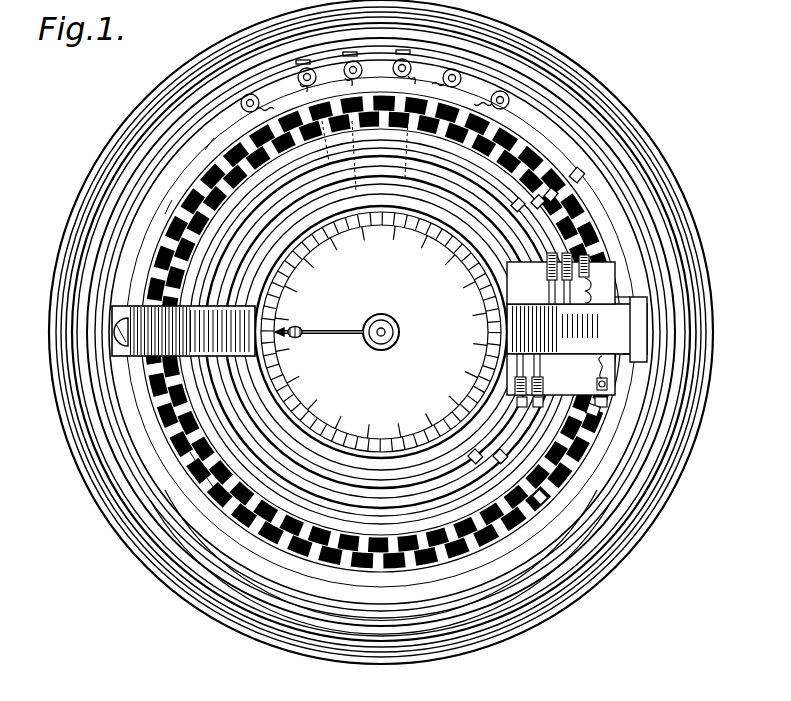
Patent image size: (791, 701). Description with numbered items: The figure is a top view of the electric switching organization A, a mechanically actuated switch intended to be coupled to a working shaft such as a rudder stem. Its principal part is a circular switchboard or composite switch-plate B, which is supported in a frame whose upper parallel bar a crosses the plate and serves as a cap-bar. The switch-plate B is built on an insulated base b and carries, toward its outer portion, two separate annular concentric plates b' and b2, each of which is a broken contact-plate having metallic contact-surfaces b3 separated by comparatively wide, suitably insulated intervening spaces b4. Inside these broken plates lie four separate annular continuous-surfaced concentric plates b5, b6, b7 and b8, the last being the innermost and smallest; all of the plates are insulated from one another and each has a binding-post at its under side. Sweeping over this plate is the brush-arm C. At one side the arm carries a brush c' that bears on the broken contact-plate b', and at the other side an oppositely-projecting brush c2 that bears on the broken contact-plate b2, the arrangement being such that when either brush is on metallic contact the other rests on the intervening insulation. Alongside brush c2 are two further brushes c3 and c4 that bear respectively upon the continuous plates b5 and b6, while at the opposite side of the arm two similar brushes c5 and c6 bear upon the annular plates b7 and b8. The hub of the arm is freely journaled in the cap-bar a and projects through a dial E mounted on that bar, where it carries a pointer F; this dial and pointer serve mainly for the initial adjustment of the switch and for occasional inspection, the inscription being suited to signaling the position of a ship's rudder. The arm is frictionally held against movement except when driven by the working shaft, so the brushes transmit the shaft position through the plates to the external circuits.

The electric switching organization A is at (369, 332).
The composite switch-plate B is at (245, 200).
The upper parallel bar a is at (379, 329).
The insulated base b is at (381, 332).
The broken contact-plate b' is at (176, 463).
The broken contact-plate b2 is at (205, 475).
The contact-surfaces b3 is at (158, 424).
The intervening spaces b4 is at (150, 263).
The continuous-surfaced annular plate b5 is at (265, 497).
The continuous-surfaced annular plate b6 is at (293, 497).
The continuous-surfaced annular plate b7 is at (322, 493).
The continuous-surfaced annular plate b8 is at (350, 483).
The brush-arm C is at (561, 330).
The brush c' is at (568, 454).
The brush c2 is at (566, 205).
The brush c3 is at (556, 236).
The brush c4 is at (533, 227).
The brush c5 is at (520, 418).
The brush c6 is at (498, 437).
The dial E is at (381, 332).
The pointer F is at (319, 318).